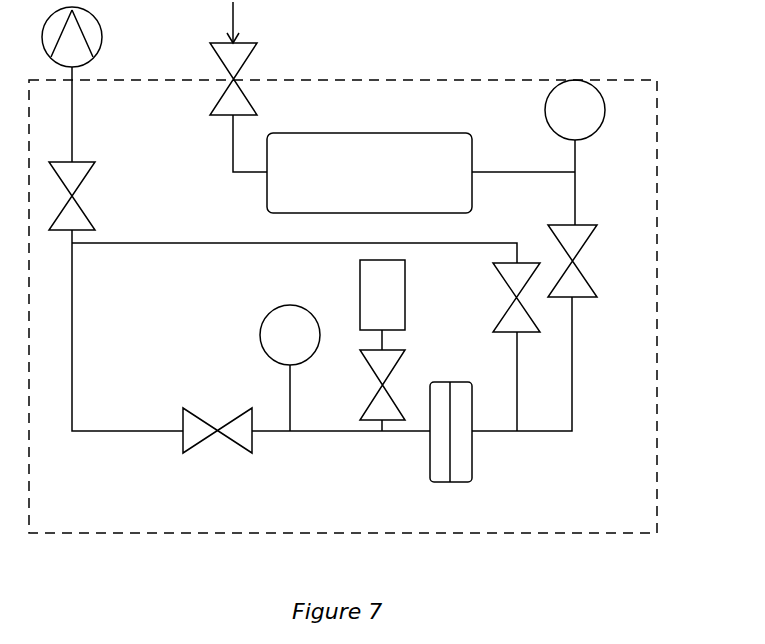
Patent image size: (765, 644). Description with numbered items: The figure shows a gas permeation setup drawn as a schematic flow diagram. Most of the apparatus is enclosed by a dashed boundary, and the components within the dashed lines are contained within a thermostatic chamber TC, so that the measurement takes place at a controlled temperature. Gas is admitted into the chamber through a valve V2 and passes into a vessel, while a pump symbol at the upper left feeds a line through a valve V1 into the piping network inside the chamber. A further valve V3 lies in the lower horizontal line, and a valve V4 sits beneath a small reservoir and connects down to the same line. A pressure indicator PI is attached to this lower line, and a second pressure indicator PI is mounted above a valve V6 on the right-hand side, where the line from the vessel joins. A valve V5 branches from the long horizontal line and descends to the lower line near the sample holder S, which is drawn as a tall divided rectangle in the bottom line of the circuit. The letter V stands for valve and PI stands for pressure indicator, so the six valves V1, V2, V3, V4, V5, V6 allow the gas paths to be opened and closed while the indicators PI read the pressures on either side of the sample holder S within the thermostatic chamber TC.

The valve V1 is at (82, 196).
The valve V2 is at (216, 79).
The valve V3 is at (217, 420).
The valve V4 is at (368, 385).
The valve V5 is at (503, 297).
The valve V6 is at (581, 261).
The pressure indicator PI is at (432, 222).
The sample holder S is at (451, 448).
The thermostatic chamber TC is at (343, 306).